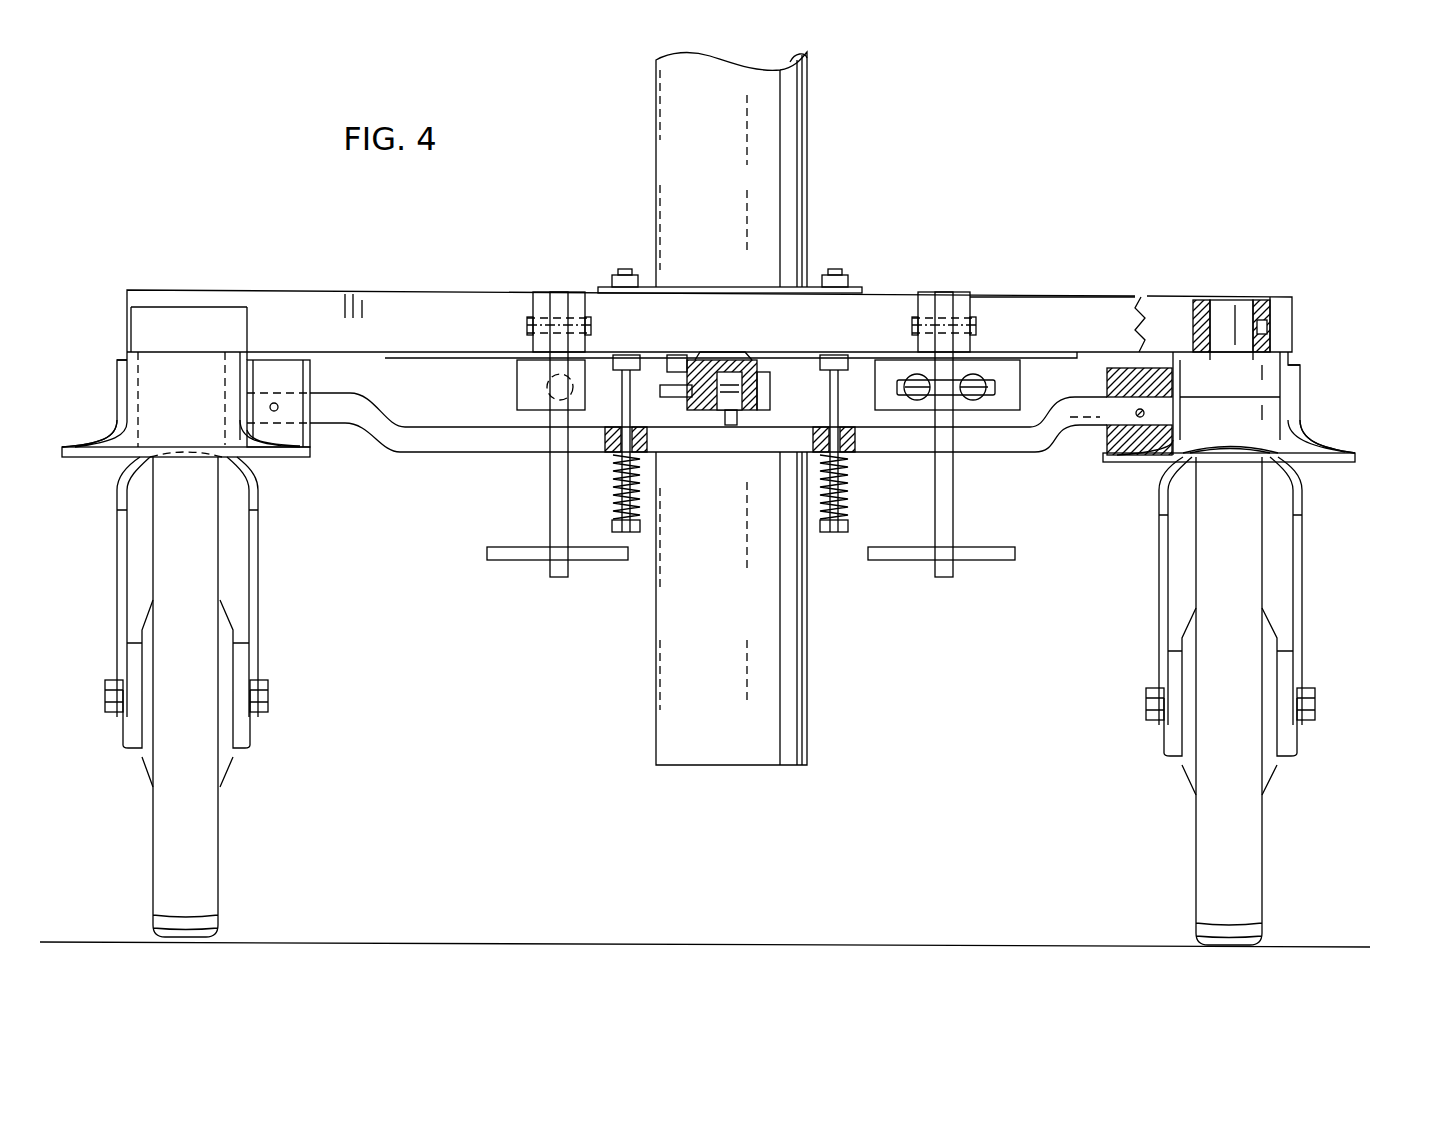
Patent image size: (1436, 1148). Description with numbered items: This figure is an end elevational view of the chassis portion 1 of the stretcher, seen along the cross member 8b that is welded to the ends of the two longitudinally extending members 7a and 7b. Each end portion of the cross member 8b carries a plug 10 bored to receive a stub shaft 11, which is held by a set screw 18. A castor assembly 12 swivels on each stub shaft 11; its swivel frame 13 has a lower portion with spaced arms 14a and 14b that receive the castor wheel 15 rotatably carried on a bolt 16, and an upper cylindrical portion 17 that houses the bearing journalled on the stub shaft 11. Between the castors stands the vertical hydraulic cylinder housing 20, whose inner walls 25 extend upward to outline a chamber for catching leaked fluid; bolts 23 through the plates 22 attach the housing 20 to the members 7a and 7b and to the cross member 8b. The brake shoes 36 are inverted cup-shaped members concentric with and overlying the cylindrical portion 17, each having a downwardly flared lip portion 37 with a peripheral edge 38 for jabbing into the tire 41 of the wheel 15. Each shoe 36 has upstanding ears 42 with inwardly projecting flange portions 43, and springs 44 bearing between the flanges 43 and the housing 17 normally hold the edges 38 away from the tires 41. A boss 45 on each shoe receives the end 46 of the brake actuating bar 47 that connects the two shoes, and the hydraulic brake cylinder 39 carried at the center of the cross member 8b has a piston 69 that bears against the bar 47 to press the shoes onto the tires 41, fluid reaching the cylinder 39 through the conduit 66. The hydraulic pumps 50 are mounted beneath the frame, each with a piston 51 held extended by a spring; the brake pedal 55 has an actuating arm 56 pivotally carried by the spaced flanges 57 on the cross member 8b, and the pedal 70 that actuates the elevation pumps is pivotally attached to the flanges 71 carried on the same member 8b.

The chassis portion 1 is at (375, 259).
The longitudinally extending member 7a is at (578, 352).
The longitudinally extending member 7b is at (882, 352).
The cross member 8b is at (998, 292).
The plug 10 is at (1198, 310).
The stub shaft 11 is at (1230, 320).
The castor assembly 12 is at (112, 387).
The swivel frame 13 is at (268, 634).
The arm 14a is at (125, 560).
The arm 14b is at (258, 577).
The castor wheel 15 is at (218, 775).
The bolt 16 is at (105, 697).
The cylindrical portion 17 is at (1270, 412).
The set screw 18 is at (1265, 332).
The hydraulic cylinder housing 20 is at (792, 690).
The plate 22 is at (828, 282).
The bolt 23 is at (620, 280).
The inner wall 25 is at (803, 62).
The brake shoe 36 is at (117, 362).
The flared peripheral lip portion 37 is at (96, 442).
The peripheral edge 38 is at (80, 458).
The hydraulic brake cylinder 39 is at (757, 392).
The tire 41 is at (218, 905).
The upstanding ear 42 is at (208, 318).
The flange portion 43 is at (180, 305).
The spring 44 is at (620, 480).
The boss 45 is at (292, 372).
The end of brake actuating bar 46 is at (1120, 435).
The brake actuating bar 47 is at (872, 440).
The hydraulic pump 50 is at (527, 372).
The piston 51 is at (548, 385).
The brake pedal 55 is at (522, 547).
The actuating arm 56 is at (550, 468).
The flange 57 is at (558, 292).
The conduit 66 is at (680, 400).
The piston 69 is at (731, 412).
The pedal 70 is at (962, 548).
The flange 71 is at (963, 292).